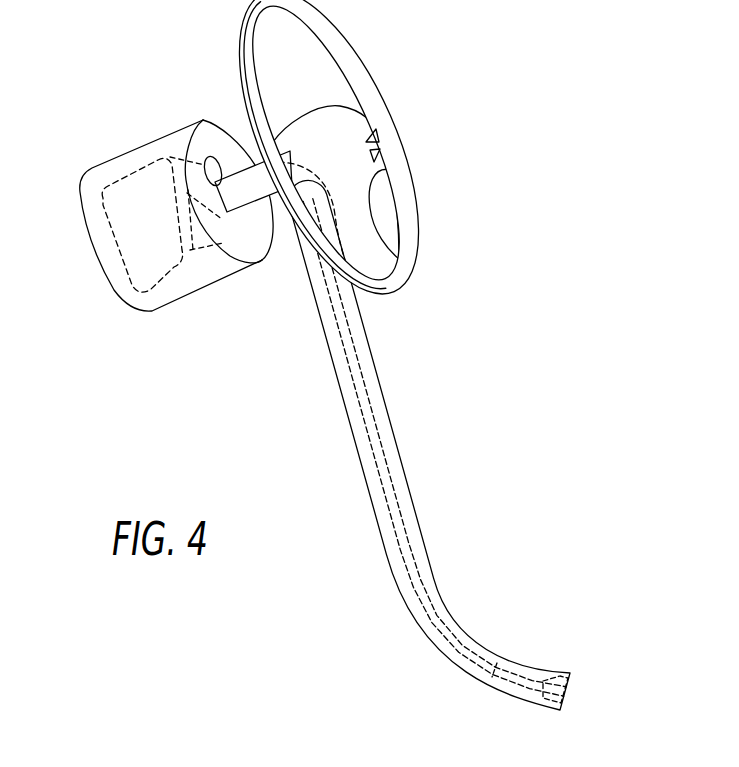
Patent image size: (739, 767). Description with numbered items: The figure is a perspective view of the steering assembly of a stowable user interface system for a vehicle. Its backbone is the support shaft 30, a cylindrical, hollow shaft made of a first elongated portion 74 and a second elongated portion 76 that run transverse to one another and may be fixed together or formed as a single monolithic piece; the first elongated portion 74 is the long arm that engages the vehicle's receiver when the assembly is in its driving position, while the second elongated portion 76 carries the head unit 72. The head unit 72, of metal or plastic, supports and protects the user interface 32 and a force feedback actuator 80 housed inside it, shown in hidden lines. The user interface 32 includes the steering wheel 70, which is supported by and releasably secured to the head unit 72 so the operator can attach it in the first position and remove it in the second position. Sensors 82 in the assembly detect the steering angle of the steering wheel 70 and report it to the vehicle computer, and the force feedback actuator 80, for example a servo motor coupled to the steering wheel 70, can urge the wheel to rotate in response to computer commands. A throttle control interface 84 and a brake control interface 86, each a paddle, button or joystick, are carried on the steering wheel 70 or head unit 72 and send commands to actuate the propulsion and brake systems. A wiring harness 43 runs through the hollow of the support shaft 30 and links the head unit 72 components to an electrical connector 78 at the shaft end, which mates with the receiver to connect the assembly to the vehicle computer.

The support shaft 30 is at (442, 445).
The user interface 32 is at (355, 47).
The wiring harness 43 is at (376, 424).
The steering wheel 70 is at (416, 196).
The head unit 72 is at (165, 133).
The first elongated portion 74 is at (410, 487).
The second elongated portion 76 is at (264, 207).
The electrical connector 78 is at (562, 675).
The force feedback actuator 80 is at (127, 192).
The sensors 82 is at (226, 130).
The throttle control interface 84 is at (378, 130).
The brake control interface 86 is at (380, 150).